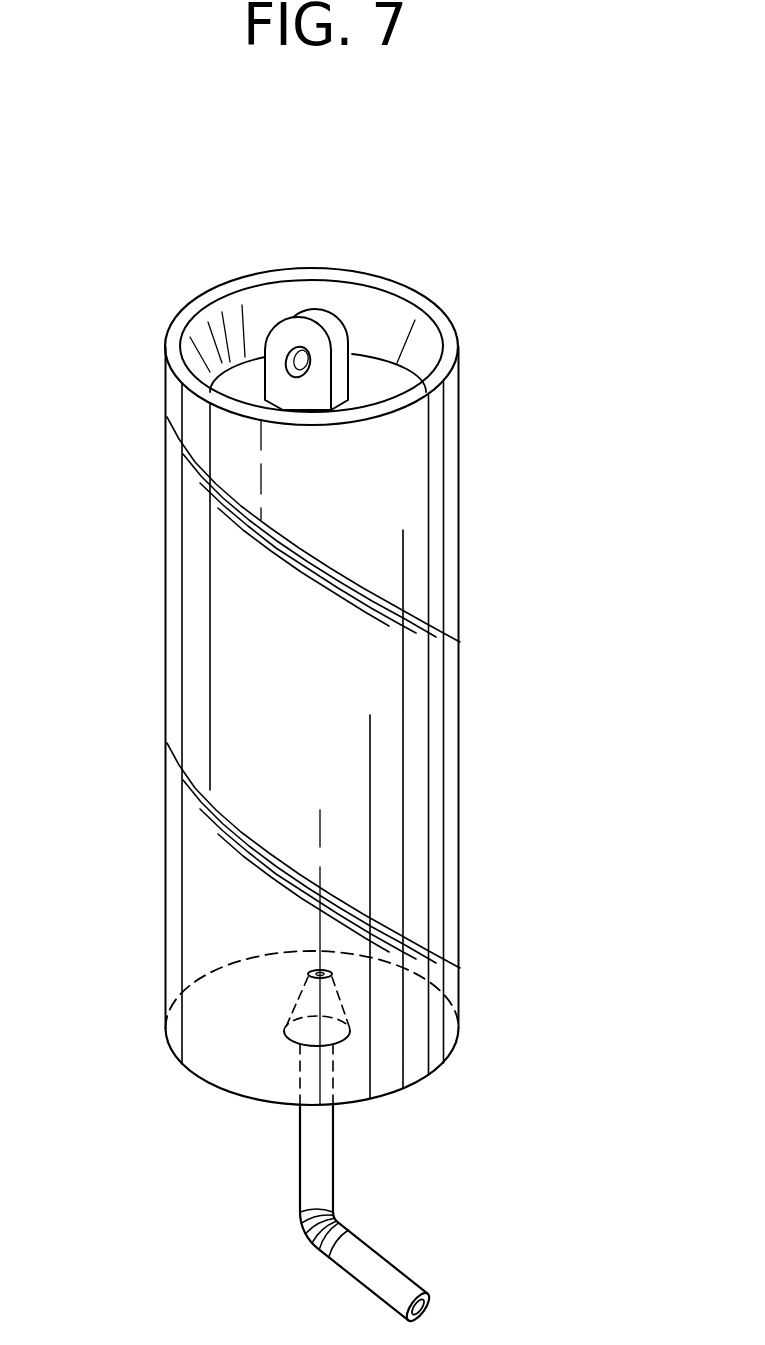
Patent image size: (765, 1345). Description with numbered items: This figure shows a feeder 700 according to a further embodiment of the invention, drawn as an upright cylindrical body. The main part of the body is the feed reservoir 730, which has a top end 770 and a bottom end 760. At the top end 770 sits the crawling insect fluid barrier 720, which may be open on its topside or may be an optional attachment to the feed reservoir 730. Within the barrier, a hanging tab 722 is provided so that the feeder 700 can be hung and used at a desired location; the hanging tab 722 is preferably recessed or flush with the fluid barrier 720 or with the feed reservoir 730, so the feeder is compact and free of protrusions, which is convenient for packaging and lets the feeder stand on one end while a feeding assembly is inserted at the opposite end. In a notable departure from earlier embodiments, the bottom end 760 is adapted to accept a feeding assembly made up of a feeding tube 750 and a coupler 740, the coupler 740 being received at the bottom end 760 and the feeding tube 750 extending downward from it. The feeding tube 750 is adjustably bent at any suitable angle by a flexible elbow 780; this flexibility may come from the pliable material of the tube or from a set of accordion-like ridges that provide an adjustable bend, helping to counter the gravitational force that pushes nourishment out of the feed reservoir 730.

The feeder 700 is at (99, 163).
The crawling insect fluid barrier 720 is at (445, 332).
The hanging tab 722 is at (345, 387).
The feed reservoir 730 is at (433, 478).
The coupler 740 is at (297, 995).
The feeding tube 750 is at (323, 1165).
The bottom end 760 is at (238, 1067).
The top end 770 is at (182, 340).
The flexible elbow 780 is at (310, 1247).